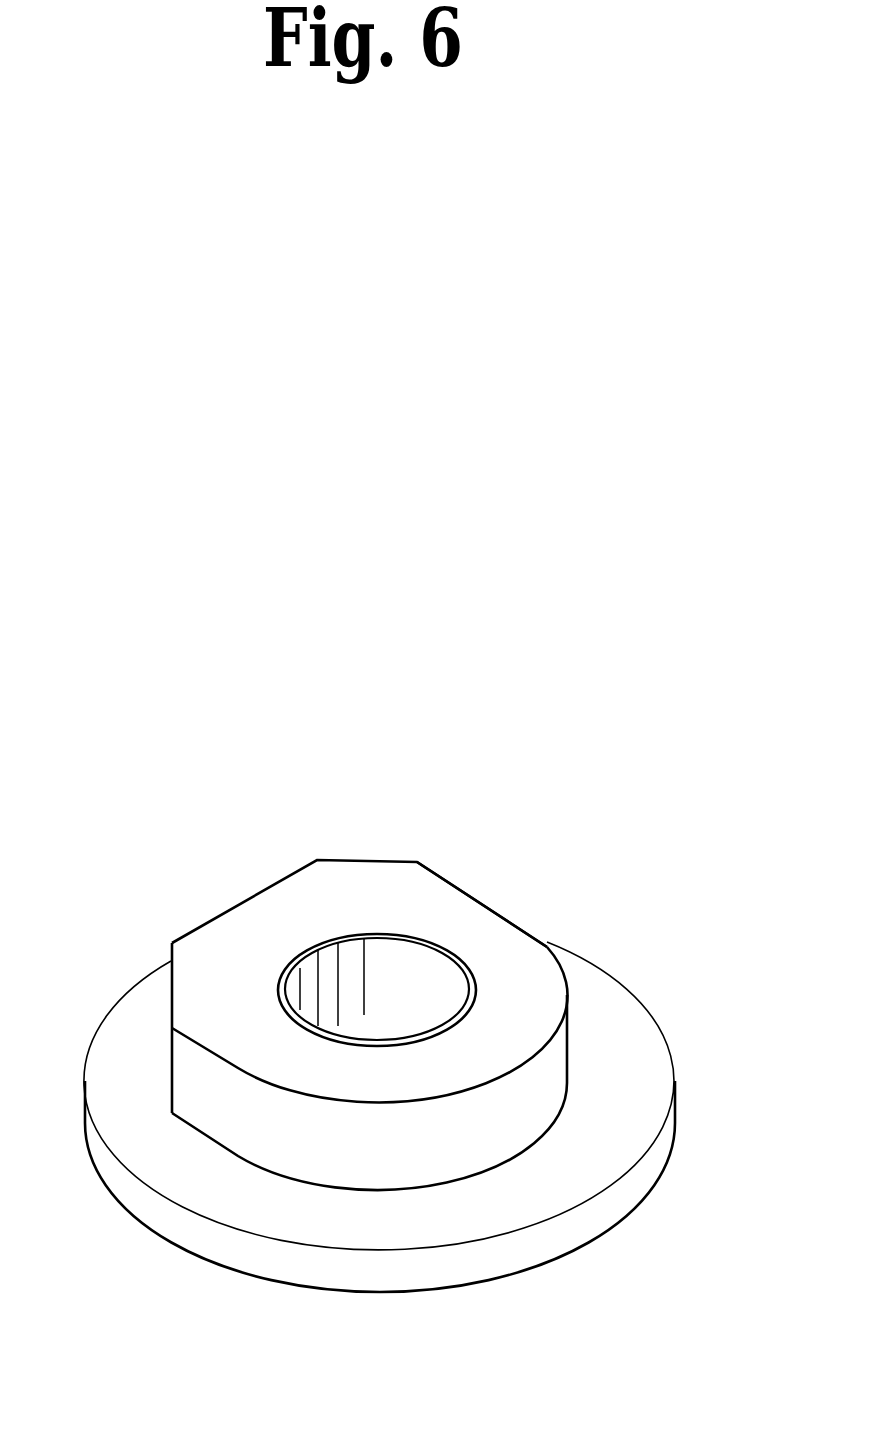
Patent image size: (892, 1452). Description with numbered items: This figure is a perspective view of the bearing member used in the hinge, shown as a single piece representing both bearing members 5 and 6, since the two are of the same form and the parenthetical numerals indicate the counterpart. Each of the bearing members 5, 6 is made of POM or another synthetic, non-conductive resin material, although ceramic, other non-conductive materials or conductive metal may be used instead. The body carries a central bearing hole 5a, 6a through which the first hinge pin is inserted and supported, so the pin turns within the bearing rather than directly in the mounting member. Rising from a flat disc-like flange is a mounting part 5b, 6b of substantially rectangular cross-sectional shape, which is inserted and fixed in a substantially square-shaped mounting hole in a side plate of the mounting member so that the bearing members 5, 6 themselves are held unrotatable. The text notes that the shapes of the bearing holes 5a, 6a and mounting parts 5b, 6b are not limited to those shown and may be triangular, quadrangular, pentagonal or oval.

The bearing member 5 is at (379, 1021).
The bearing member 6 is at (417, 862).
The bearing hole 5a is at (293, 937).
The bearing hole 6a is at (328, 958).
The mounting part 5b is at (559, 888).
The mounting part 6b is at (513, 933).